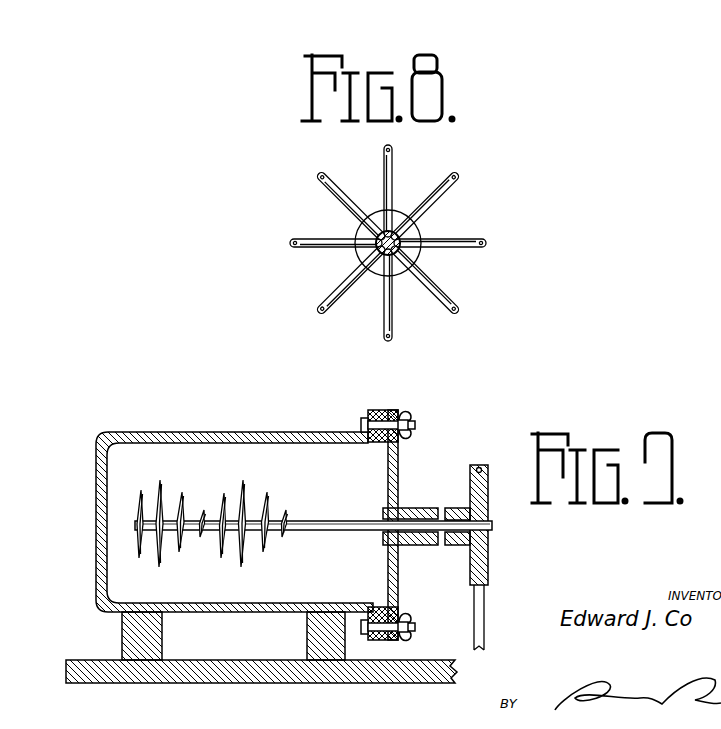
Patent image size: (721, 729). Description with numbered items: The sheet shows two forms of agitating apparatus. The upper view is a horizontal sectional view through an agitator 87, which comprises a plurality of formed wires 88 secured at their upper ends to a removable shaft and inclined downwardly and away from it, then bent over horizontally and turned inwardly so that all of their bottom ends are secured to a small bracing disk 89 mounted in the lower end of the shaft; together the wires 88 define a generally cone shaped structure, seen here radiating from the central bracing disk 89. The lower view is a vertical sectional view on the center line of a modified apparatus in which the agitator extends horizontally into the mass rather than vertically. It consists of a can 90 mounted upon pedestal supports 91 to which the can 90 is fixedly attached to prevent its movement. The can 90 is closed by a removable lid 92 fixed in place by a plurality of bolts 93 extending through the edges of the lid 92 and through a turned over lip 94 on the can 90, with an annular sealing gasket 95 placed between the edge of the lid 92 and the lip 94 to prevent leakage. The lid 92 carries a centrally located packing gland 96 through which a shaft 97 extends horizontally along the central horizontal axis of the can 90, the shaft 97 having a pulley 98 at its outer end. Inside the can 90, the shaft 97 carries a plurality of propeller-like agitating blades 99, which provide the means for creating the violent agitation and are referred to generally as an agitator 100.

In FIG. 8, the agitator 87 is at (440, 267).
In FIG. 8, the formed wires 88 is at (447, 190).
In FIG. 8, the bracing disk 89 is at (398, 219).
In FIG. 9, the can 90 is at (207, 431).
In FIG. 9, the pedestal supports 91 is at (163, 637).
In FIG. 9, the removable lid 92 is at (398, 481).
In FIG. 9, the bolts 93 is at (412, 424).
In FIG. 9, the turned over lip 94 is at (370, 412).
In FIG. 9, the annular sealing gasket 95 is at (383, 410).
In FIG. 9, the packing gland 96 is at (417, 508).
In FIG. 9, the shaft 97 is at (310, 522).
In FIG. 9, the pulley 98 is at (488, 561).
In FIG. 9, the propeller-like agitating blades 99 is at (250, 562).
In FIG. 9, the agitator 100 is at (241, 529).